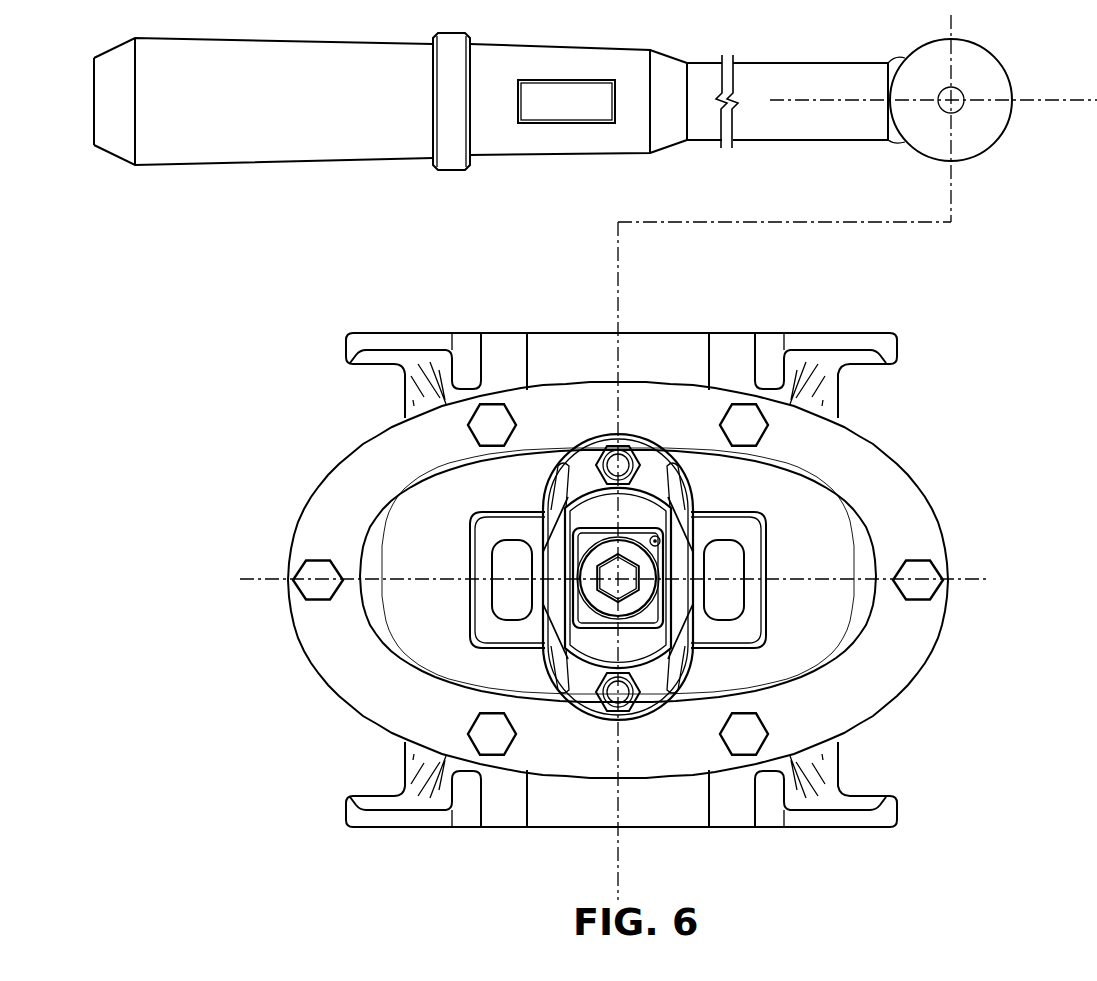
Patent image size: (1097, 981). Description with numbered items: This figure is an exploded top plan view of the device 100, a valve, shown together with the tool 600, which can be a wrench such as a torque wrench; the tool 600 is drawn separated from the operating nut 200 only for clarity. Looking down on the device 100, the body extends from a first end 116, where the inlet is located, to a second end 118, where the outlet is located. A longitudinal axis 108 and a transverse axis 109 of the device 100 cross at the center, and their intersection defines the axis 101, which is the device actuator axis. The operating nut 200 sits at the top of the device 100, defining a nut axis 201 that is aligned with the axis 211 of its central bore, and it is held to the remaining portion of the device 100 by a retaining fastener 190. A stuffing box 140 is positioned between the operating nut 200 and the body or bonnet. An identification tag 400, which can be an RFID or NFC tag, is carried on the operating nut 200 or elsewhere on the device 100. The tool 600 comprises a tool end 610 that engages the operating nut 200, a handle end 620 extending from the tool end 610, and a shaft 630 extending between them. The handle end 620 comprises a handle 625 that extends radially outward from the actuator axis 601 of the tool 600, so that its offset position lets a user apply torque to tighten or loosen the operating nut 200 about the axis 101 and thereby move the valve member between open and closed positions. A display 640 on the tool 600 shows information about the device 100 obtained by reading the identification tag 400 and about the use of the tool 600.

The device 100 is at (983, 344).
The axis 101 is at (618, 638).
The longitudinal axis 108 is at (618, 865).
The transverse axis 109 is at (975, 590).
The first end 116 is at (520, 333).
The second end 118 is at (790, 830).
The stuffing box 140 is at (545, 517).
The fastener 190 is at (667, 573).
The operating nut 200 is at (672, 655).
The nut axis 201 is at (618, 638).
The axis 211 is at (558, 640).
The identification tag 400 is at (690, 500).
The tool 600 is at (294, 218).
The actuator axis 601 is at (958, 105).
The tool end 610 is at (987, 73).
The handle end 620 is at (245, 146).
The handle 625 is at (122, 145).
The shaft 630 is at (772, 117).
The display 640 is at (563, 115).